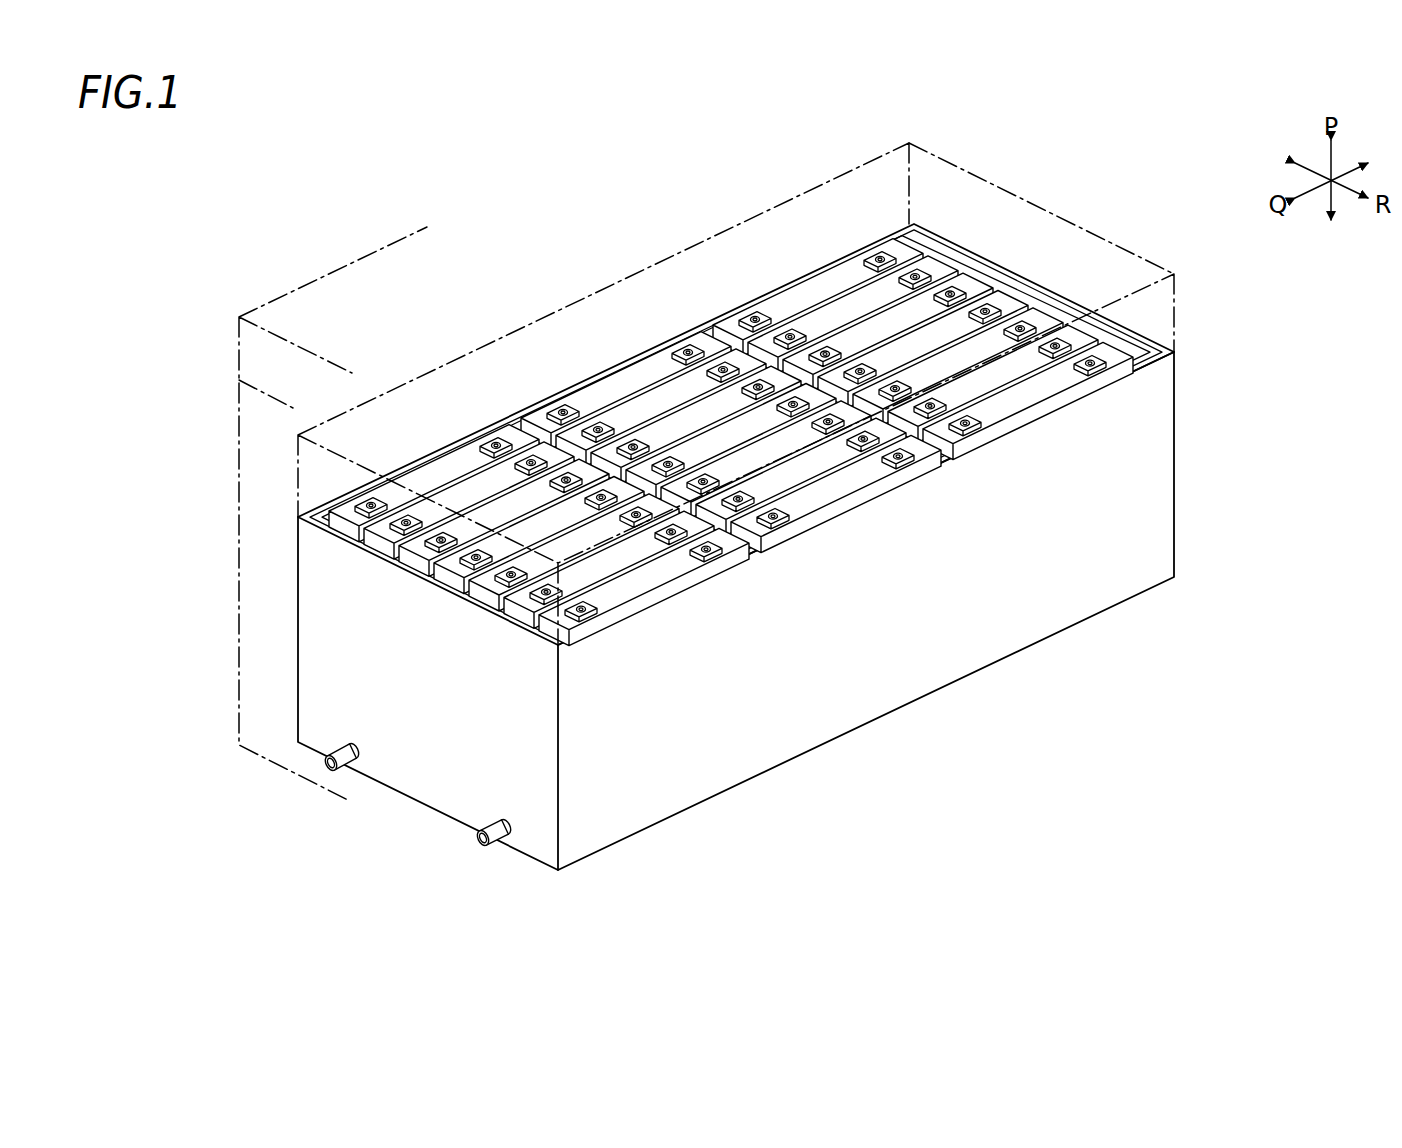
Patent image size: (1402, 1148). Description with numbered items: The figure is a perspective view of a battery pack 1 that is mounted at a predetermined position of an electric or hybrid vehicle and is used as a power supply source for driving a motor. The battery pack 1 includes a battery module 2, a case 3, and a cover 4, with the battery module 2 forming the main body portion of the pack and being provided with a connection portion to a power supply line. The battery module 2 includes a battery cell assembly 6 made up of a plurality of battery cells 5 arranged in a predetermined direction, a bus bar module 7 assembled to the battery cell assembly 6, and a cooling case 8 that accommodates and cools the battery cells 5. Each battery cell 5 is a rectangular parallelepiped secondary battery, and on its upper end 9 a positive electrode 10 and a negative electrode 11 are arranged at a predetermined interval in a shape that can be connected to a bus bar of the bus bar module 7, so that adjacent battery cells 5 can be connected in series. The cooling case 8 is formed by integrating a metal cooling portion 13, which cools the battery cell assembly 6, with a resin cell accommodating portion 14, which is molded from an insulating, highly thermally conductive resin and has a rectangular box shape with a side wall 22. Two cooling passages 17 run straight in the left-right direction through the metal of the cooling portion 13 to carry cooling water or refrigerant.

The battery pack 1 is at (246, 208).
The battery module 2 is at (1197, 276).
The case 3 is at (238, 580).
The cover 4 is at (238, 326).
The battery cell 5 is at (802, 297).
The battery cell assembly 6 is at (838, 280).
The bus bar module 7 is at (1050, 209).
The cooling case 8 is at (653, 887).
The upper end 9 is at (630, 593).
The positive electrode 10 is at (592, 616).
The negative electrode 11 is at (755, 558).
The cooling portion 13 is at (652, 793).
The cell accommodating portion 14 is at (742, 755).
The cooling passage 17 is at (504, 833).
The side wall 22 is at (833, 715).